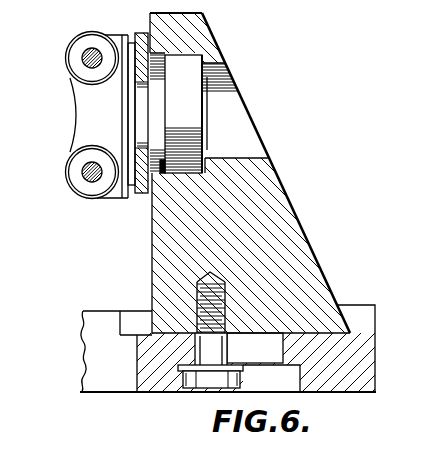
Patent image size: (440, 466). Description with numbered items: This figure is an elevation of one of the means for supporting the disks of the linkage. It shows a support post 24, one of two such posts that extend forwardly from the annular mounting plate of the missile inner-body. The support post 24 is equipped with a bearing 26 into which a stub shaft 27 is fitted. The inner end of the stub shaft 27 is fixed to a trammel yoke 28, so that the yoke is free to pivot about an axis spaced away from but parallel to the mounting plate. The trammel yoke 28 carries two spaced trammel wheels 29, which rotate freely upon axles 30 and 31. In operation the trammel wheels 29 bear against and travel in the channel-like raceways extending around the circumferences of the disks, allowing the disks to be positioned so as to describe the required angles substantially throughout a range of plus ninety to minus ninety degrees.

The support post 24 is at (279, 176).
The bearing 26 is at (190, 92).
The stub shaft 27 is at (208, 112).
The trammel yoke 28 is at (87, 112).
The trammel wheels 29 is at (82, 47).
The axle 30 is at (83, 52).
The axle 31 is at (83, 169).